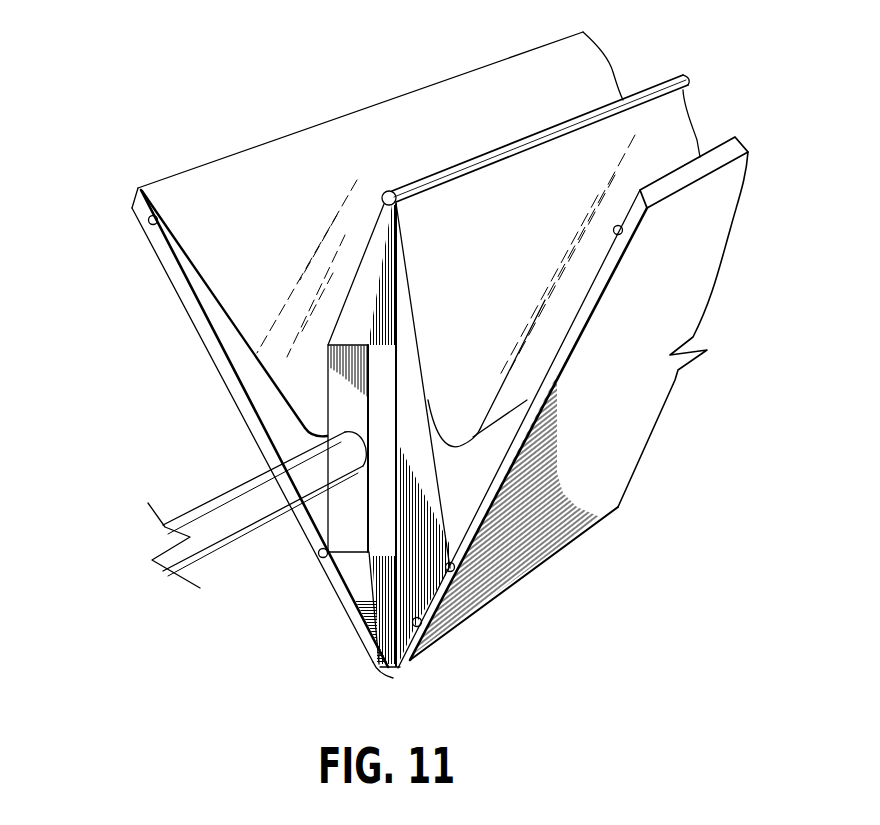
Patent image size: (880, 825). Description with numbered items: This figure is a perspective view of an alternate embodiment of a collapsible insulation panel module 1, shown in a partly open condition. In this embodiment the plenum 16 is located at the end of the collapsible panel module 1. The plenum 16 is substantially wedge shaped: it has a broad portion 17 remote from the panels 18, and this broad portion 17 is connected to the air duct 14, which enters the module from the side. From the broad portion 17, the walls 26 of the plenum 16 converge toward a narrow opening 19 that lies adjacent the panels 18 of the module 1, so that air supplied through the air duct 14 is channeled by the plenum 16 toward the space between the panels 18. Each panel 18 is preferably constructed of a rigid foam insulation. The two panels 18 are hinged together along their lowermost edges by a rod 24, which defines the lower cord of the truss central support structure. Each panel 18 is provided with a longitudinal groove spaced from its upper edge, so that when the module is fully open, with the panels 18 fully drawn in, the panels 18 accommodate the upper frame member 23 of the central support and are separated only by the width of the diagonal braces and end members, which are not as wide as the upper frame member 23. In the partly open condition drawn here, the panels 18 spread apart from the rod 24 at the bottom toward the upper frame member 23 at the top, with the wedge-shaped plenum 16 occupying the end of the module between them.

The collapsible panel module 1 is at (144, 452).
The air duct 14 is at (233, 527).
The plenum 16 is at (405, 431).
The broad portion 17 is at (345, 398).
The panels 18 is at (617, 444).
The narrow opening 19 is at (393, 350).
The upper frame member 23 is at (470, 160).
The rod 24 is at (393, 678).
The walls 26 is at (382, 532).